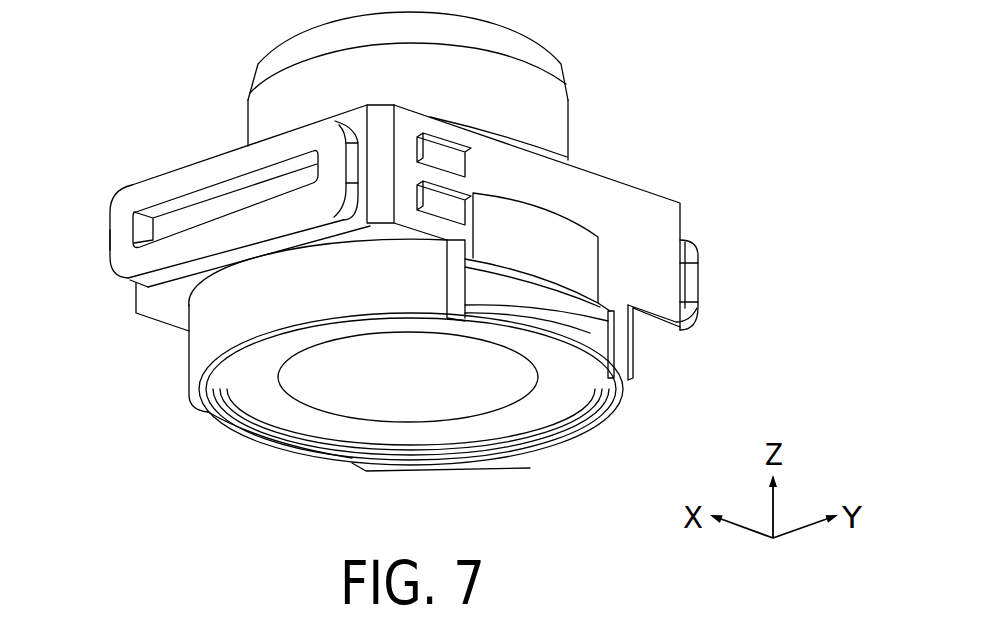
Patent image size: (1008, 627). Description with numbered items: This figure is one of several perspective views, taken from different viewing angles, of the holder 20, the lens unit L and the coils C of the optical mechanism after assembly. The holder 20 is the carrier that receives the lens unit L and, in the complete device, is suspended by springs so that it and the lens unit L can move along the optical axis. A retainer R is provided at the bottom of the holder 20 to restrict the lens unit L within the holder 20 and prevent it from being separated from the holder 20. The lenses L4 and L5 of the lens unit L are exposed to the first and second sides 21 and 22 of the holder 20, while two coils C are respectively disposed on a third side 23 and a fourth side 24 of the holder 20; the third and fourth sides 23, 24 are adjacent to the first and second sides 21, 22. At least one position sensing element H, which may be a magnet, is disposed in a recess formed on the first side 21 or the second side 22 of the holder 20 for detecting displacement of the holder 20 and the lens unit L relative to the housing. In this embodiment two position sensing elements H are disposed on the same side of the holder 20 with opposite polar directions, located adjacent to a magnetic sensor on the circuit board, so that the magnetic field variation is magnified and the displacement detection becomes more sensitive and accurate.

The holder 20 is at (532, 47).
The first side 21 is at (160, 322).
The second side 22 is at (657, 218).
The third side 23 is at (212, 213).
The fourth side 24 is at (682, 231).
The position sensing element H is at (455, 210).
The coil C is at (112, 238).
The lens unit L is at (483, 407).
The lens L4 is at (582, 263).
The lens L5 is at (582, 320).
The retainer R is at (250, 442).